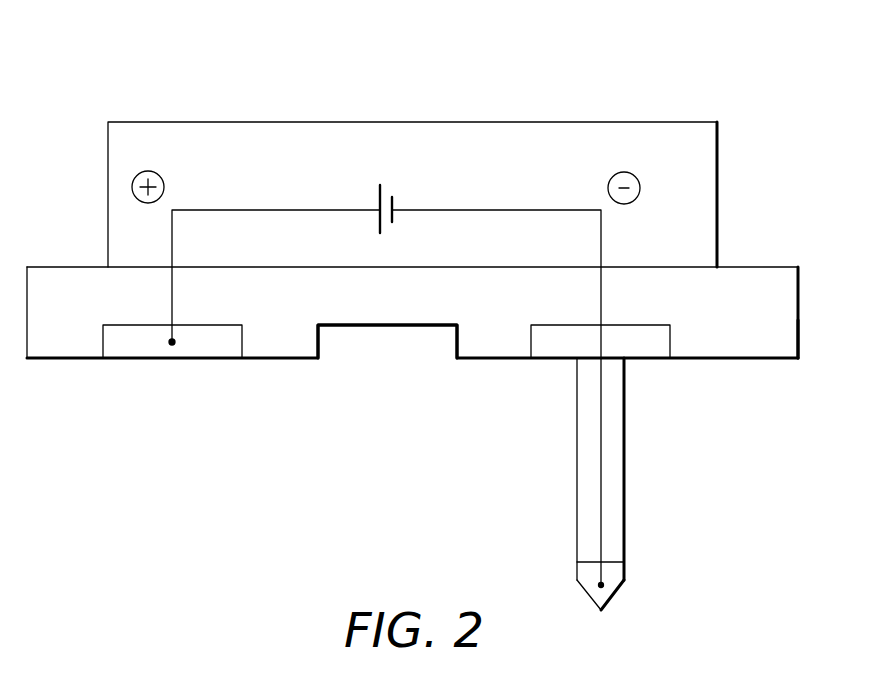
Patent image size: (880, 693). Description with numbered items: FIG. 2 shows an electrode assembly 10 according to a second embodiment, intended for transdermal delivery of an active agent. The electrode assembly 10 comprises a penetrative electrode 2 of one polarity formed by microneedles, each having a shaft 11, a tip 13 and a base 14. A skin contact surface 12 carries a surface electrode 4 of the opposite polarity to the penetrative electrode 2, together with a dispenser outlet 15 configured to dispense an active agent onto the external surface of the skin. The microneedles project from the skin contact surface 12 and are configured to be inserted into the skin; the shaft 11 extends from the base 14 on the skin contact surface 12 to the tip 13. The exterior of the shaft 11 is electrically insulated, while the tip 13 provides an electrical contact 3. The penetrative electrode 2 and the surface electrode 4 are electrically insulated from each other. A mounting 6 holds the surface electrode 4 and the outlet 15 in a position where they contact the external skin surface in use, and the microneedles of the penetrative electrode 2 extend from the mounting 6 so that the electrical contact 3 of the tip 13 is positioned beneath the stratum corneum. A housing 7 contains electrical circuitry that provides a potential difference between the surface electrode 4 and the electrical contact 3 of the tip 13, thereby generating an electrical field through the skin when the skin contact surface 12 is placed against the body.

The electrode assembly 10 is at (661, 86).
The housing 7 is at (718, 134).
The mounting 6 is at (412, 312).
The surface electrode 4 is at (223, 353).
The dispenser outlet 15 is at (387, 352).
The base 14 is at (545, 352).
The skin contact surface 12 is at (777, 360).
The penetrative electrode 2 is at (613, 498).
The shaft 11 is at (587, 469).
The electrical contact 3 is at (615, 590).
The tip 13 is at (582, 583).